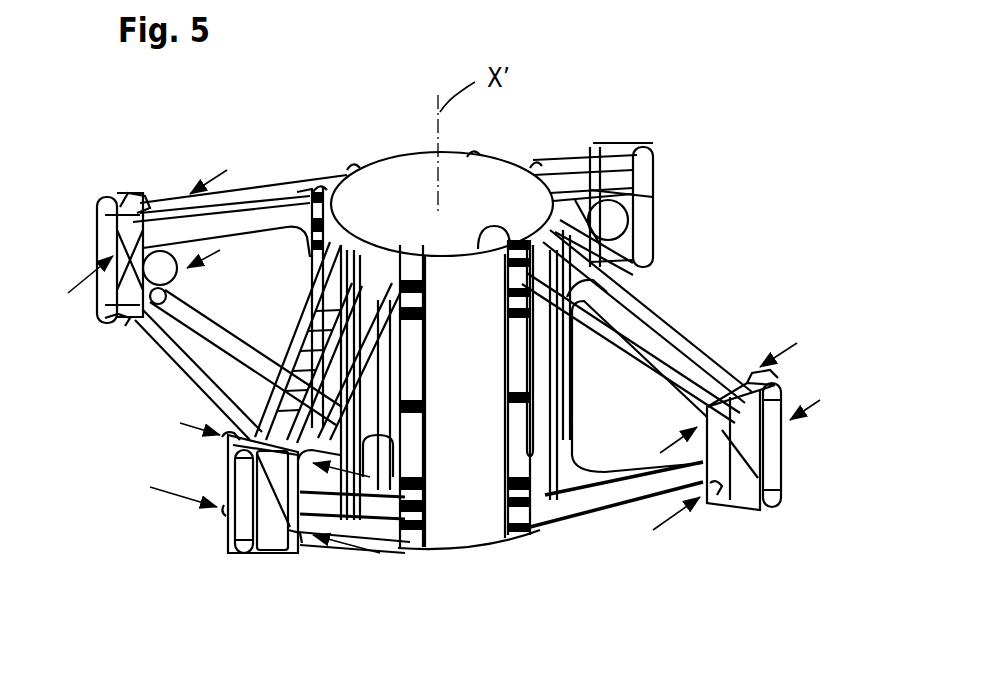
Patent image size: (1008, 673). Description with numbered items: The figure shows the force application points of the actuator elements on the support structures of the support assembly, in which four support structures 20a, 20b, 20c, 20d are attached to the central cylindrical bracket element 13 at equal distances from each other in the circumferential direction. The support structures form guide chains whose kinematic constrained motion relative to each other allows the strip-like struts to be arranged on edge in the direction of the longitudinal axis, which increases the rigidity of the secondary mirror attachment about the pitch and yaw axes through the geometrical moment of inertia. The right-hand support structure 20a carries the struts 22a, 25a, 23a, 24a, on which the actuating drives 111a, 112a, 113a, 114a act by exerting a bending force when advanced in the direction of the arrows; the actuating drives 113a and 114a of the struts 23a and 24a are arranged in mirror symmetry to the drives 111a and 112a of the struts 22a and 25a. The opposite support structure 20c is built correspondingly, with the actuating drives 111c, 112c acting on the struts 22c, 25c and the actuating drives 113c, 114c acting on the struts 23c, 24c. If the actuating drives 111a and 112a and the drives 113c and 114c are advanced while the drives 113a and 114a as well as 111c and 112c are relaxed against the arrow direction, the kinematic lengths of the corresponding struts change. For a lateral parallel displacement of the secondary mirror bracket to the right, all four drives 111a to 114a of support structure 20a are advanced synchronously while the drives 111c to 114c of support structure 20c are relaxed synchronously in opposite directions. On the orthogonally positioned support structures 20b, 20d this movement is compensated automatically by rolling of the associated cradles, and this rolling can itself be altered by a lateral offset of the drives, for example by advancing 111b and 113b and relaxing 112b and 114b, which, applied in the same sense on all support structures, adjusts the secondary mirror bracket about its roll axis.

The cylindrical bracket element 13 is at (466, 520).
The support structure 20a is at (659, 415).
The support structure 20b is at (357, 562).
The support structure 20c is at (240, 254).
The support structure 20d is at (567, 155).
The strut 22a is at (645, 305).
The strut 22c is at (260, 222).
The strut 23a is at (615, 480).
The strut 23c is at (207, 370).
The strut 24a is at (593, 510).
The strut 24c is at (238, 340).
The strut 25a is at (610, 330).
The strut 25c is at (294, 192).
The actuating drive 111a is at (793, 434).
The actuating drive 111b is at (209, 532).
The actuating drive 111c is at (166, 246).
The actuating drive 112a is at (753, 492).
The actuating drive 112b is at (223, 442).
The actuating drive 112c is at (157, 192).
The actuating drive 113a is at (787, 450).
The actuating drive 113b is at (293, 535).
The actuating drive 113c is at (113, 327).
The actuating drive 114a is at (710, 482).
The actuating drive 114b is at (230, 520).
The actuating drive 114c is at (175, 281).